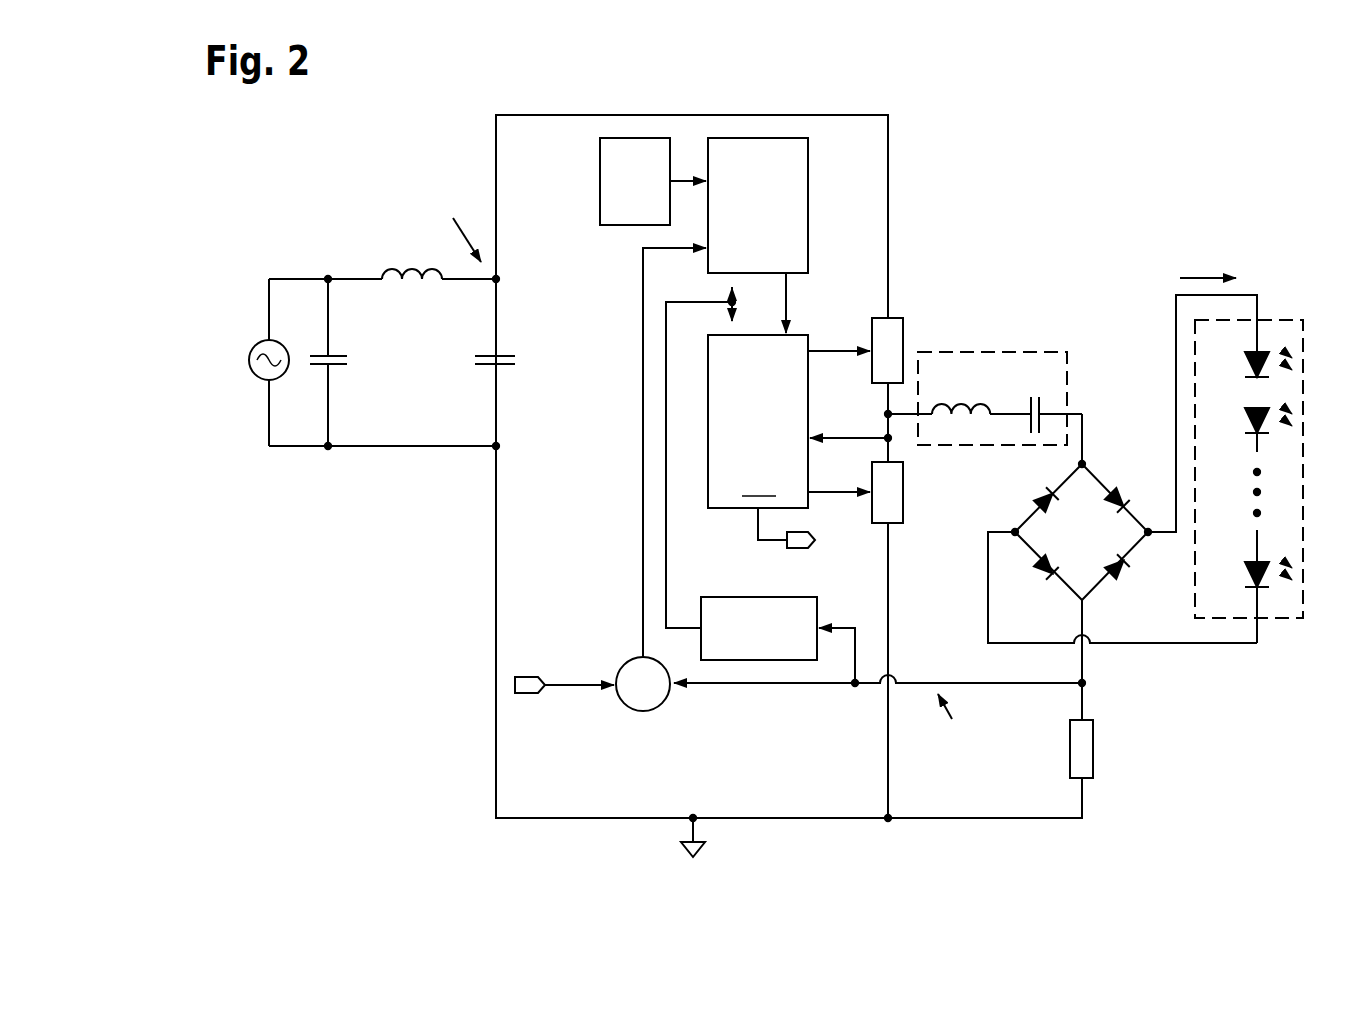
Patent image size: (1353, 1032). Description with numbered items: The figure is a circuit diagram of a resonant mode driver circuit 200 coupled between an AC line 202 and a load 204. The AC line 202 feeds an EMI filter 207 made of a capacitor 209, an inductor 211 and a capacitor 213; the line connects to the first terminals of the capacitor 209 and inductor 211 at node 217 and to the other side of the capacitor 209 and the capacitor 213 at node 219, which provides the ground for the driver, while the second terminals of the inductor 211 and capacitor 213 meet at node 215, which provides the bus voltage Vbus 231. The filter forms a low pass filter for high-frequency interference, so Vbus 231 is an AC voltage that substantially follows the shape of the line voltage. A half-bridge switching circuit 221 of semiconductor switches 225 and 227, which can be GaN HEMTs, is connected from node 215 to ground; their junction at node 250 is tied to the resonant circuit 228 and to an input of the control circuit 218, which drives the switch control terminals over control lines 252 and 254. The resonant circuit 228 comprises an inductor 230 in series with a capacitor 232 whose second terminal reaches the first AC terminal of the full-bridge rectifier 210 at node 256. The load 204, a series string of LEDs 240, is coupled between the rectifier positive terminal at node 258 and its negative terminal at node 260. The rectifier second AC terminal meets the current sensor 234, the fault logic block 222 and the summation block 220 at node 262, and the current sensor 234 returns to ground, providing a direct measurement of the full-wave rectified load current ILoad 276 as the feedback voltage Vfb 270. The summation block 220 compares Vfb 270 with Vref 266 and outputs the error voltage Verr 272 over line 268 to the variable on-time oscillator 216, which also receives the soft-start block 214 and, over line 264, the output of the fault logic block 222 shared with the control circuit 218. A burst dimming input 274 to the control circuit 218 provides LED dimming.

The driver circuit 200 is at (1232, 106).
The AC line 202 is at (253, 339).
The load 204 is at (1276, 319).
The EMI filter 207 is at (331, 212).
The capacitor 209 is at (340, 352).
The full-bridge rectifier 210 is at (1030, 600).
The inductor 211 is at (410, 270).
The capacitor 213 is at (508, 351).
The soft-start block 214 is at (623, 227).
The node 215 is at (500, 280).
The variable on-time oscillator 216 is at (809, 202).
The node 217 is at (325, 277).
The control circuit 218 is at (758, 421).
The node 219 is at (500, 447).
The summation block 220 is at (656, 711).
The half-bridge switching circuit 221 is at (937, 525).
The fault logic block 222 is at (817, 601).
The semiconductor switch 225 is at (903, 324).
The semiconductor switch 227 is at (903, 494).
The resonant circuit 228 is at (1014, 352).
The inductor 230 is at (940, 408).
The bus voltage 231 is at (483, 206).
The capacitor 232 is at (1029, 406).
The current sensor 234 is at (1093, 752).
The LEDs 240 is at (1244, 580).
The node 250 is at (880, 414).
The control line 252 is at (840, 348).
The control line 254 is at (844, 494).
The node 256 is at (1084, 464).
The node 258 is at (1152, 536).
The node 260 is at (1014, 531).
The node 262 is at (1088, 686).
The line 264 is at (666, 497).
The Vref 266 is at (528, 678).
The line 268 is at (642, 404).
The Vfb 270 is at (980, 746).
The Verr 272 is at (630, 550).
The burst dimming input 274 is at (815, 540).
The ILoad 276 is at (1184, 278).